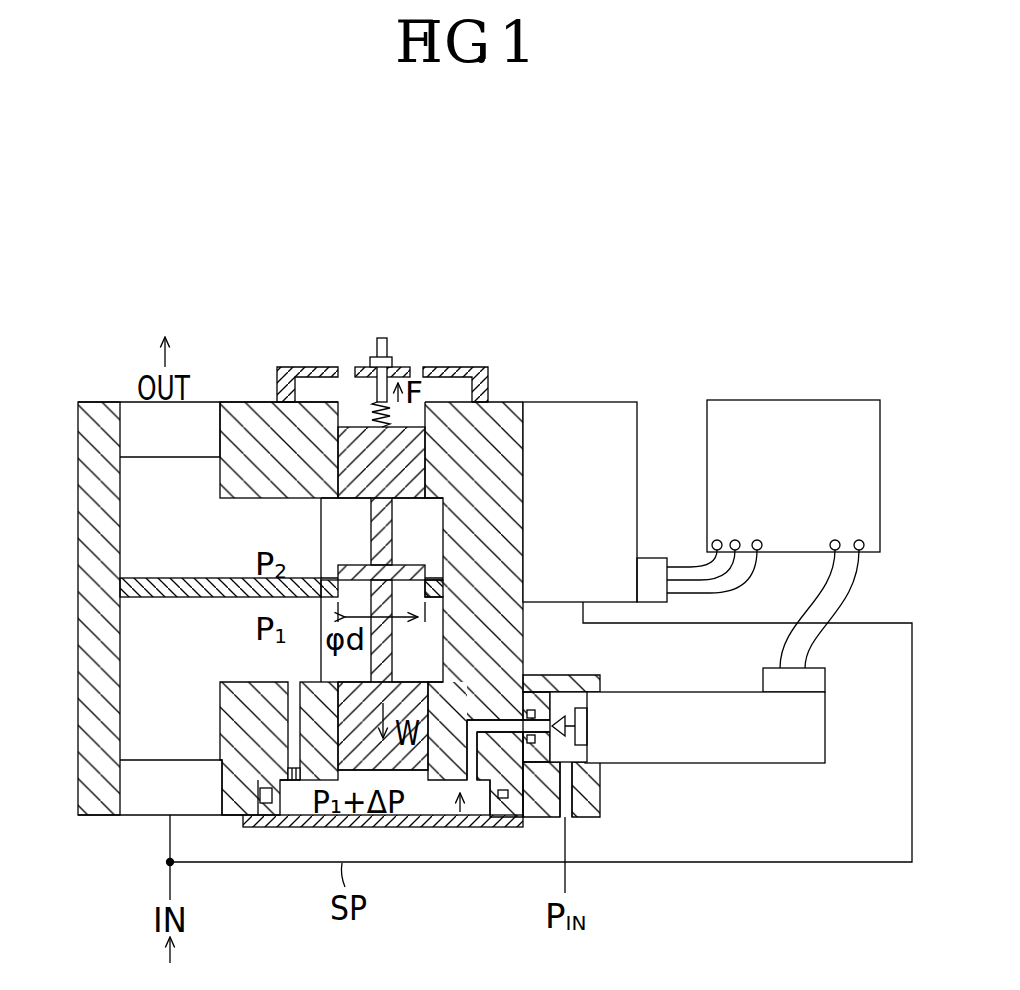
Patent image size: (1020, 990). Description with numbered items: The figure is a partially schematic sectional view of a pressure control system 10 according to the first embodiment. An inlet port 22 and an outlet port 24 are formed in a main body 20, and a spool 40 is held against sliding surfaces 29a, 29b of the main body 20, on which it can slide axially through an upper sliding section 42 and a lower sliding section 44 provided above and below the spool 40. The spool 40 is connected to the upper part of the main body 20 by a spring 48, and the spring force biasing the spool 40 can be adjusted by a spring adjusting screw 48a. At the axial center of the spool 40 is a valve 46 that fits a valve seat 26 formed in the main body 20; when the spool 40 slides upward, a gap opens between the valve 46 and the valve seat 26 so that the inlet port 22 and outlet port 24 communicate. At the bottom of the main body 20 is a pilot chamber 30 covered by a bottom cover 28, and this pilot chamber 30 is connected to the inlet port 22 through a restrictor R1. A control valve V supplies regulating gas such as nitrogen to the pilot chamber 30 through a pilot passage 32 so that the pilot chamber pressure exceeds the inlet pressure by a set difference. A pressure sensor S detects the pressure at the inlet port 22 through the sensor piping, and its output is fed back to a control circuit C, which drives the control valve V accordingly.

The pressure control system 10 is at (118, 320).
The main body 20 is at (92, 707).
The inlet port 22 is at (157, 805).
The outlet port 24 is at (138, 420).
The valve seat 26 is at (427, 595).
The bottom cover 28 is at (410, 820).
The sliding surface 29a is at (352, 427).
The sliding surface 29b is at (347, 683).
The pilot chamber 30 is at (460, 820).
The pilot passage 32 is at (500, 727).
The spool 40 is at (405, 522).
The upper sliding section 42 is at (420, 452).
The lower sliding section 44 is at (413, 753).
The valve 46 is at (427, 568).
The spring 48 is at (390, 413).
The spring adjusting screw 48a is at (412, 328).
The pressure sensor S is at (593, 413).
The control circuit C is at (792, 417).
The control valve V is at (722, 738).
The restrictor R1 is at (292, 773).